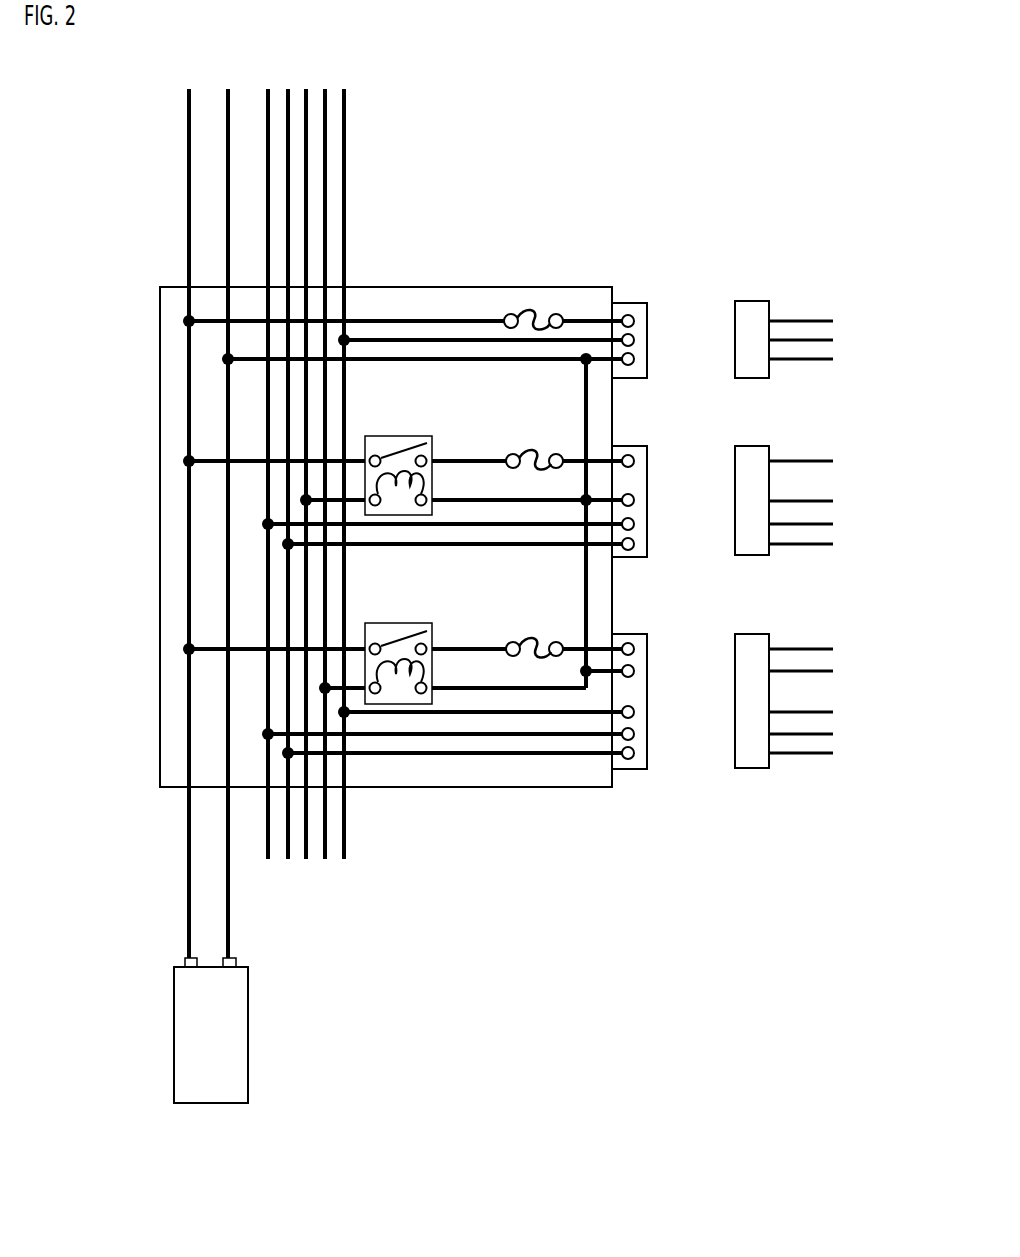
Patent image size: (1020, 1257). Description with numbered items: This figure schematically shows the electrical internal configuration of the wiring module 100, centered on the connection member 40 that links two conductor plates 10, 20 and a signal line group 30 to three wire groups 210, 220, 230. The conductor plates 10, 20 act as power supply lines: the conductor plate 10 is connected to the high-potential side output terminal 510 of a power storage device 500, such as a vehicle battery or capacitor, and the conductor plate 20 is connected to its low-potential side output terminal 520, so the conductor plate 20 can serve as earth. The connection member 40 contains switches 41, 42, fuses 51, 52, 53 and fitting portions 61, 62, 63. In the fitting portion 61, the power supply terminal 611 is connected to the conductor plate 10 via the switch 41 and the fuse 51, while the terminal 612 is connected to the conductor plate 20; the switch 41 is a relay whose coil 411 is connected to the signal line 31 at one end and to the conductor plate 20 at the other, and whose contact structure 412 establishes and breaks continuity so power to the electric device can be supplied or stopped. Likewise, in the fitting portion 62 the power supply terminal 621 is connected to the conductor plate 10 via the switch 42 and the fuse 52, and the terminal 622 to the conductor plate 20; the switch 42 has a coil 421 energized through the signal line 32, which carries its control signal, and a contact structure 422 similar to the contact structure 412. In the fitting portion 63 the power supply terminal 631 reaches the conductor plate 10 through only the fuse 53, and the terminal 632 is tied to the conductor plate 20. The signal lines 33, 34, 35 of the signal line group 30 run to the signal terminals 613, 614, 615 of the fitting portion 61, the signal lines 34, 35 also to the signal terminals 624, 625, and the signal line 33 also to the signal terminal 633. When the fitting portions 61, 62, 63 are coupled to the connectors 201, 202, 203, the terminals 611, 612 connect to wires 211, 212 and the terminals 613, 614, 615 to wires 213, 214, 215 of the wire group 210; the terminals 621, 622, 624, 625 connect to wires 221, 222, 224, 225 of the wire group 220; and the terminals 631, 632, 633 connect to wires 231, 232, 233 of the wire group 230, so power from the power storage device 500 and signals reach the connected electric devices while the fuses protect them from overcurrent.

The vehicle power supply system 100 is at (537, 166).
The conductor plate 10 is at (189, 174).
The conductor plate 20 is at (228, 217).
The signal line group 30 is at (363, 474).
The signal line 31 is at (325, 219).
The signal line 32 is at (306, 190).
The signal line 33 is at (412, 112).
The signal line 34 is at (268, 132).
The signal line 35 is at (288, 161).
The connection member 40 is at (581, 287).
The switch 41 is at (431, 628).
The coil 411 is at (406, 591).
The contact structure 412 is at (381, 644).
The switch 42 is at (431, 439).
The coil 421 is at (406, 402).
The contact structure 422 is at (381, 456).
The fuse 51 is at (527, 641).
The fuse 52 is at (527, 453).
The fuse 53 is at (525, 312).
The fitting portion 61 is at (628, 634).
The terminal 611 is at (634, 646).
The terminal 612 is at (634, 671).
The terminal 613 is at (634, 709).
The terminal 614 is at (634, 734).
The terminal 615 is at (634, 756).
The fitting portion 62 is at (626, 446).
The power supply terminal 621 is at (634, 458).
The power supply terminal 622 is at (634, 497).
The signal terminal 624 is at (634, 522).
The signal terminal 625 is at (634, 544).
The fitting portion 63 is at (625, 303).
The power supply terminal 631 is at (634, 318).
The power supply terminal 632 is at (634, 362).
The signal terminal 633 is at (634, 340).
The connector 201 is at (750, 642).
The wire group 210 is at (832, 678).
The wire 211 is at (820, 646).
The wire 212 is at (820, 670).
The wire 213 is at (820, 709).
The wire 214 is at (820, 731).
The wire 215 is at (818, 751).
The connector 202 is at (750, 458).
The wire group 220 is at (832, 477).
The wire 221 is at (820, 458).
The wire 222 is at (820, 498).
The wire 224 is at (820, 522).
The wire 225 is at (818, 543).
The connector 203 is at (750, 312).
The wire group 230 is at (832, 313).
The wire 231 is at (820, 318).
The wire 232 is at (818, 357).
The wire 233 is at (820, 337).
The power storage device 500 is at (248, 1033).
The high-potential side output terminal 510 is at (185, 956).
The low-potential side output terminal 520 is at (236, 956).